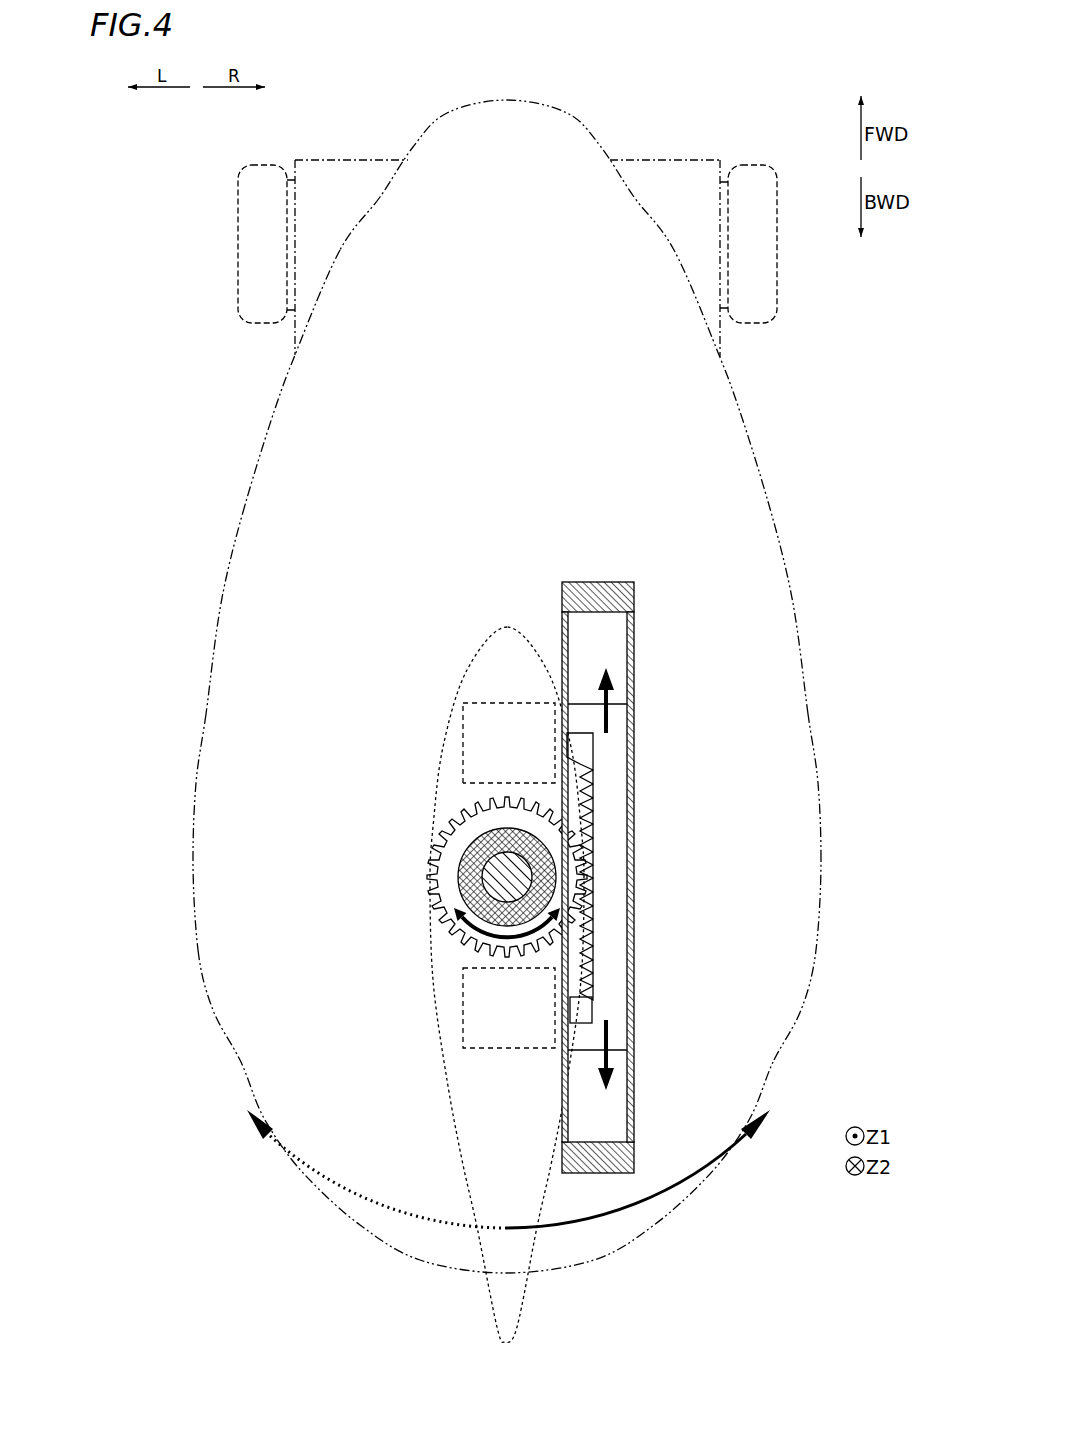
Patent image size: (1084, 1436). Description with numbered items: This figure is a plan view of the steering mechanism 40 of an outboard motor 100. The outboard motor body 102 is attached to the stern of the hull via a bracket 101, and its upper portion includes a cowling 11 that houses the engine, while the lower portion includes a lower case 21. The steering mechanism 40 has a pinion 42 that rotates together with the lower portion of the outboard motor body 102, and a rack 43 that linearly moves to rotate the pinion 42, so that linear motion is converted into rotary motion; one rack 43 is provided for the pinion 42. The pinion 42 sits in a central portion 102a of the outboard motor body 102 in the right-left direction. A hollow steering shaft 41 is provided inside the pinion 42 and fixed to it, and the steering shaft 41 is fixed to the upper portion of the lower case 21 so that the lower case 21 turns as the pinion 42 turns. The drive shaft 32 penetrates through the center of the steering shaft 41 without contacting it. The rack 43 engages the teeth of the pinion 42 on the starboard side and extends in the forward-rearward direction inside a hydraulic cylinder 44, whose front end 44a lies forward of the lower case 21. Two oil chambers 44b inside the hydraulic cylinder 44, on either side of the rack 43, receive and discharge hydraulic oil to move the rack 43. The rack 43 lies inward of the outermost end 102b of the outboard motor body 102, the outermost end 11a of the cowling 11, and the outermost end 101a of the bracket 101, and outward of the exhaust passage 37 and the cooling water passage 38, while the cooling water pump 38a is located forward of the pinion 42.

The outboard motor 100 is at (363, 122).
The bracket 101 is at (684, 140).
The outermost end of the bracket 101a is at (239, 203).
The outboard motor body 102 is at (226, 491).
The central portion of the outboard motor body 102a is at (511, 544).
The outermost end of the outboard motor body 102b is at (187, 735).
The cowling 11 is at (256, 453).
The outermost end of the cowling 11a is at (199, 808).
The lower case 21 is at (465, 669).
The drive shaft 32 is at (459, 887).
The exhaust passage 37 is at (460, 1021).
The cooling water passage 38 is at (460, 742).
The cooling water pump 38a is at (461, 763).
The steering mechanism 40 is at (677, 799).
The steering shaft 41 is at (466, 917).
The pinion 42 is at (434, 823).
The rack 43 is at (623, 727).
The hydraulic cylinder 44 is at (649, 667).
The front end of the hydraulic cylinder 44a is at (613, 581).
The oil chambers 44b is at (631, 631).